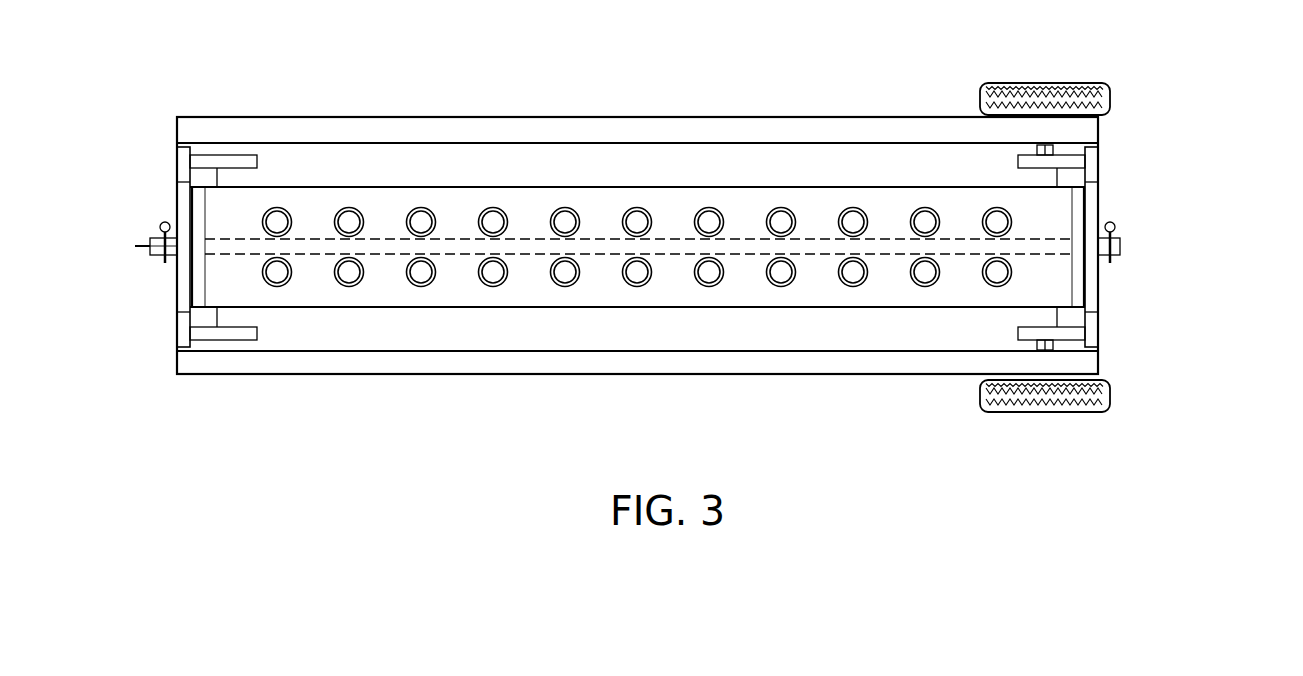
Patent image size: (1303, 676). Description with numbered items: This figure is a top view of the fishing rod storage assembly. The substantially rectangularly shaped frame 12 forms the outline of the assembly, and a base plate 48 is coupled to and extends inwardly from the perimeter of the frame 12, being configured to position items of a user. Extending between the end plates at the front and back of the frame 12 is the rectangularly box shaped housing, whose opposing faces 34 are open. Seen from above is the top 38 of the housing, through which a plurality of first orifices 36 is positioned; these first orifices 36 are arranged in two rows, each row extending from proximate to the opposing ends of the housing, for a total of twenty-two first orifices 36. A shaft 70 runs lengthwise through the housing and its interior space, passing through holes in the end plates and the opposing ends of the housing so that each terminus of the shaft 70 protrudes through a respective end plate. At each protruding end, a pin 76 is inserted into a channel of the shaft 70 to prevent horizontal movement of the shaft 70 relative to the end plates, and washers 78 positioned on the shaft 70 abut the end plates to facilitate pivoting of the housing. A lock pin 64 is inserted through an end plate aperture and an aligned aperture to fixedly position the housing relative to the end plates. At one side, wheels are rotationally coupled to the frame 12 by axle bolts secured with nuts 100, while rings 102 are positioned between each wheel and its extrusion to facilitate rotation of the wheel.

The frame 12 is at (355, 120).
The base plate 48 is at (447, 170).
The top 38 is at (520, 212).
The first orifices 36 is at (638, 222).
The shaft 70 is at (527, 248).
The opposing faces 34 is at (912, 187).
The lock pin 64 is at (150, 238).
The pins 76 is at (160, 224).
The washers 78 is at (190, 241).
The nuts 100 is at (1048, 347).
The rings 102 is at (1060, 118).